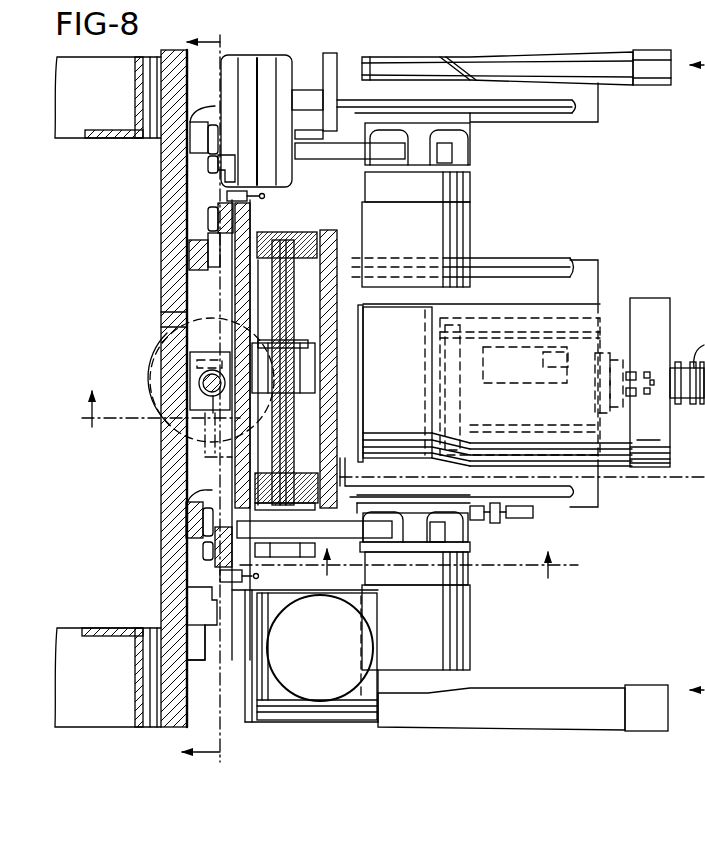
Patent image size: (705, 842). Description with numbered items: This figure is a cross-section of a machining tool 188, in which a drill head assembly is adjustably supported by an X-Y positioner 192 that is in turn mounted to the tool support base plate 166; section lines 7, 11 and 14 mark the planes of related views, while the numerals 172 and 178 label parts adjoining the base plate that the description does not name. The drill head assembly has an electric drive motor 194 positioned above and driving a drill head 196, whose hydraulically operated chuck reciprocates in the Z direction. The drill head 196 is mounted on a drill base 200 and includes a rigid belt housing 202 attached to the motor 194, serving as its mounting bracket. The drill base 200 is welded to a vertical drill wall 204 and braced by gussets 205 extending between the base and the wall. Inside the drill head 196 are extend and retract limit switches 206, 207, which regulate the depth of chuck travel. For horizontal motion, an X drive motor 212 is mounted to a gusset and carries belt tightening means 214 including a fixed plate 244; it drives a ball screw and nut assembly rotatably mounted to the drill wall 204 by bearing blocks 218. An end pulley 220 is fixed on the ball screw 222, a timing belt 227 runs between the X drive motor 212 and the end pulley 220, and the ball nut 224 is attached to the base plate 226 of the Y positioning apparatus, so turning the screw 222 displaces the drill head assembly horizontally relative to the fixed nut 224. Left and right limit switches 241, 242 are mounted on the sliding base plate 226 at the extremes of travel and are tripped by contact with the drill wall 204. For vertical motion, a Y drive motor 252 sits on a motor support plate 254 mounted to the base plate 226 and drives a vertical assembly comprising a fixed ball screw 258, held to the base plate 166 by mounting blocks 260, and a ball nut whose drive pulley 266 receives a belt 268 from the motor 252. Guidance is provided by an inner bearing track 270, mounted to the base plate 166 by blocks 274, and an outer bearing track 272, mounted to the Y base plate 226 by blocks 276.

The section line 7- 7 is at (161, 394).
The section line 11- 11 is at (215, 399).
The section line 14- 14 is at (409, 550).
The tool support base plate 166 is at (157, 456).
The frame member 172 is at (150, 89).
The flange 178 is at (110, 142).
The machining tool 188 is at (509, 241).
The X-Y positioner 192 is at (294, 39).
The electric drive motor 194 is at (624, 85).
The drill head 196 is at (610, 300).
The drill base 200 is at (600, 115).
The belt housing 202 is at (380, 386).
The drill wall 204 is at (340, 329).
The gussets 205 is at (528, 265).
The extend limit switch 206 is at (531, 386).
The retract limit switch 207 is at (483, 386).
The X drive motor 212 is at (428, 232).
The belt tightening means 214 is at (545, 512).
The bearing blocks 218 is at (255, 481).
The end pulley 220 is at (298, 560).
The ball screw 222 is at (295, 425).
The ball nut 224 is at (307, 368).
The base plate 226 is at (208, 328).
The timing belt 227 is at (381, 532).
The left limit switch 241 is at (225, 588).
The right limit switch 242 is at (228, 194).
The fixed plate 244 is at (452, 504).
The Y drive motor 252 is at (299, 654).
The motor support plate 254 is at (362, 693).
The fixed ball screw 258 is at (200, 379).
The mounting blocks 260 is at (200, 425).
The drive pulley 266 is at (163, 380).
The belt 268 is at (298, 335).
The inner bearing track 270 is at (158, 104).
The outer bearing track 272 is at (208, 215).
The blocks 274 is at (195, 262).
The blocks 276 is at (228, 198).